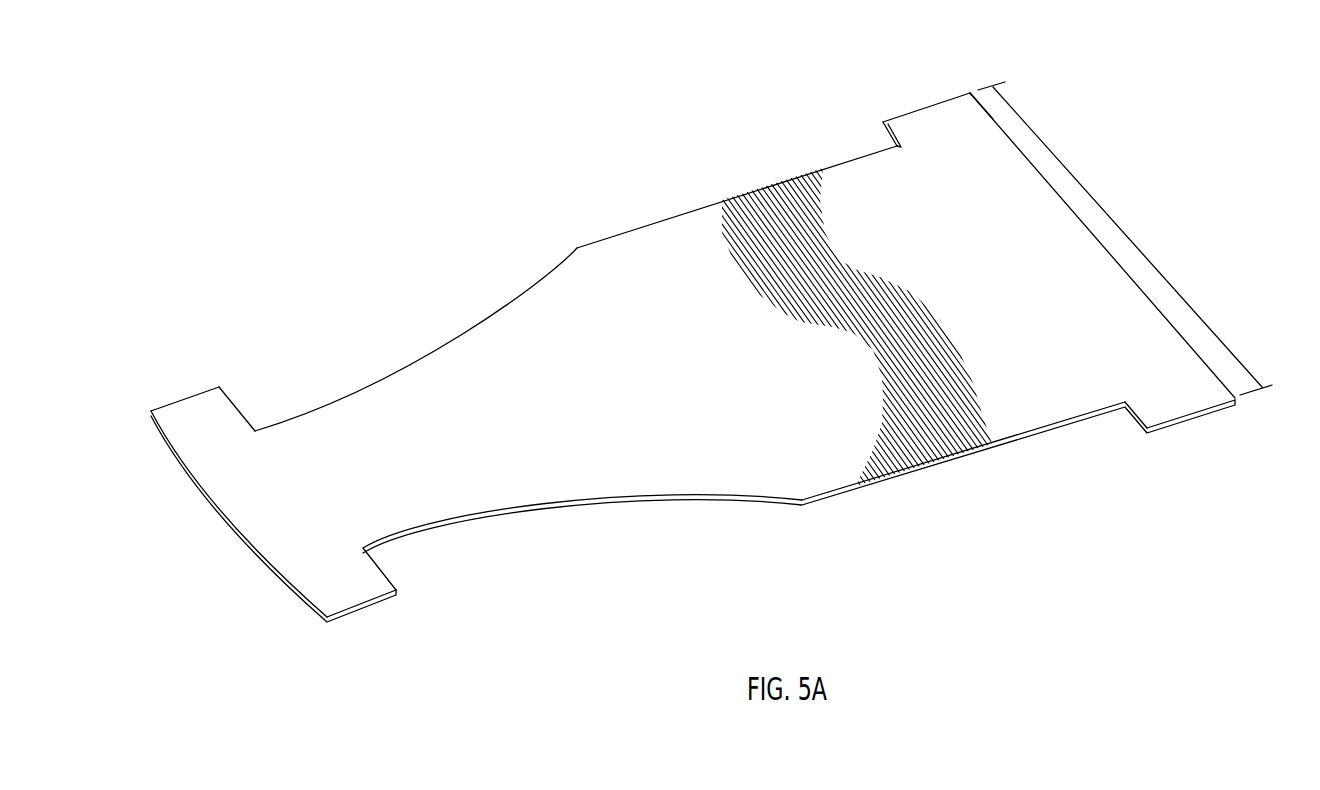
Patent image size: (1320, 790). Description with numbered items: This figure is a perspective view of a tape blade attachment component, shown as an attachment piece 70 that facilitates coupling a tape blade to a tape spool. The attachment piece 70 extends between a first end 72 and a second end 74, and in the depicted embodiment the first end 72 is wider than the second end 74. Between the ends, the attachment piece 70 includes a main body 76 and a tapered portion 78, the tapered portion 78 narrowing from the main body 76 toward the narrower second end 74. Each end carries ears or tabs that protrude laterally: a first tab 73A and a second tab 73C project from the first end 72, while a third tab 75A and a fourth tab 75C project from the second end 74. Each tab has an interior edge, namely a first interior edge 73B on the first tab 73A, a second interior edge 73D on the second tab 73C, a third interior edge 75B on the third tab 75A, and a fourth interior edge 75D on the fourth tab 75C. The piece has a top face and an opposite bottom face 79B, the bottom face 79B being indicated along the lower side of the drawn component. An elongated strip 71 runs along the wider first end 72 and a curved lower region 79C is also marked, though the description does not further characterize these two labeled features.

The attachment piece 70 is at (425, 132).
The rail 71 is at (1117, 227).
The first end 72 is at (928, 104).
The first tab 73A is at (983, 110).
The first interior edge 73B is at (887, 138).
The second tab 73C is at (1195, 417).
The second interior edge 73D is at (1135, 422).
The second end 74 is at (228, 537).
The third tab 75A is at (183, 398).
The third interior edge 75B is at (245, 410).
The fourth tab 75C is at (367, 607).
The fourth interior edge 75D is at (387, 572).
The main body 76 is at (640, 225).
The tapered portion 78 is at (378, 386).
The bottom face 79B is at (775, 458).
The curved lower portion 79C is at (722, 478).